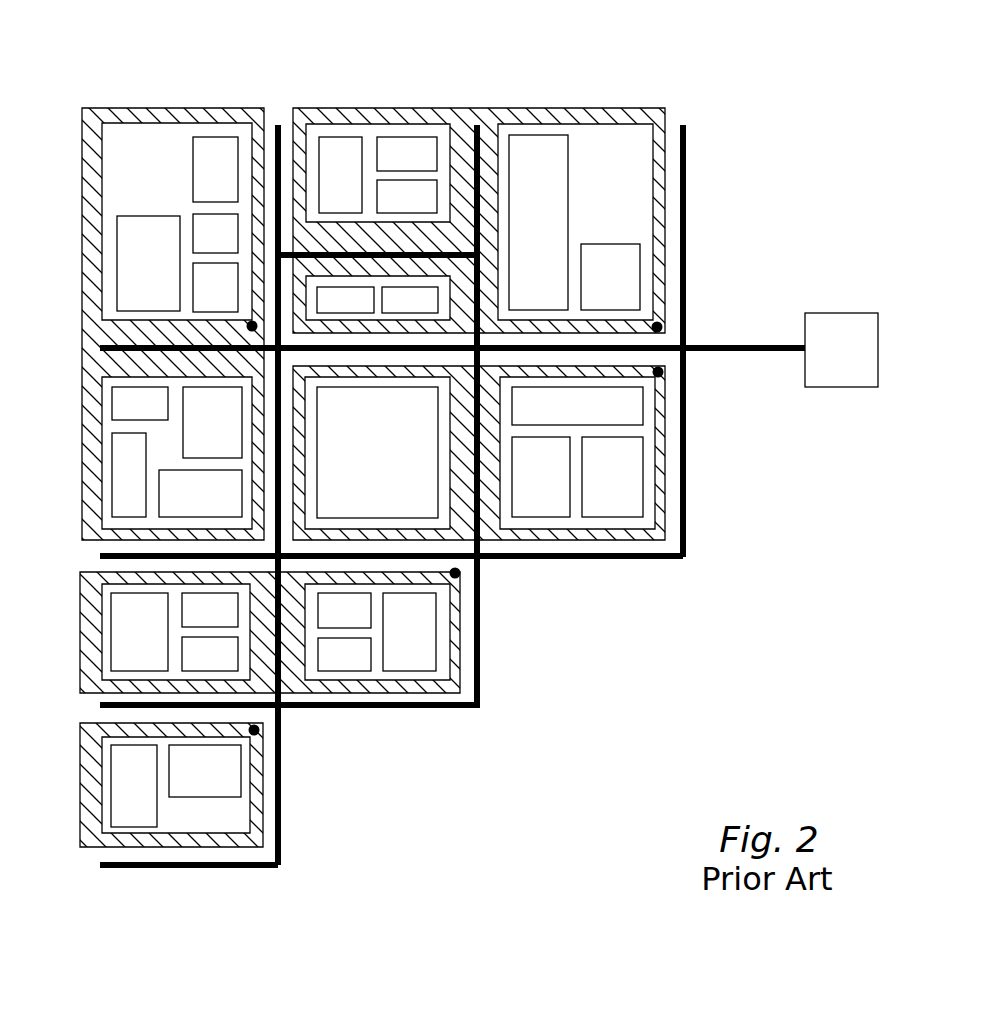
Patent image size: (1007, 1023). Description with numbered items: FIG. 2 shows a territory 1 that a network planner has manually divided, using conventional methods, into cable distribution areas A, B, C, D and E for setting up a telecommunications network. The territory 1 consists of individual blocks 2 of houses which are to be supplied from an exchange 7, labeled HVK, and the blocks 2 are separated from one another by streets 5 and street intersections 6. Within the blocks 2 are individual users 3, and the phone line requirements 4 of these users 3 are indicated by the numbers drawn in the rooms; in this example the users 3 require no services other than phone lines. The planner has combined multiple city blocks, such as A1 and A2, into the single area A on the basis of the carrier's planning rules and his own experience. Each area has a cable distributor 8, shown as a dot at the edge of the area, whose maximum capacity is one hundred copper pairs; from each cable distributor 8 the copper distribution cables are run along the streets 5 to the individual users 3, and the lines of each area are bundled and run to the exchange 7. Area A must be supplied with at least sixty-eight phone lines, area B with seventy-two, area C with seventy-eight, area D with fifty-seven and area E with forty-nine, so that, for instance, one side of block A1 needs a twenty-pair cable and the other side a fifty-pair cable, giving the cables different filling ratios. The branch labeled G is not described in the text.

The territory 1 is at (722, 77).
The block of houses 2 is at (610, 163).
The user 3 is at (540, 162).
The phone line requirement 4 is at (628, 504).
The street 5 is at (685, 222).
The street intersection 6 is at (685, 352).
The exchange 7 is at (840, 320).
The cable distributor 8 is at (657, 327).
The cable distribution area A is at (213, 113).
The city block A1 is at (162, 155).
The city block A2 is at (162, 447).
The cable distribution area B is at (386, 112).
The cable distribution area C is at (665, 485).
The cable distribution area D is at (422, 675).
The cable distribution area E is at (217, 842).
The branch line G is at (490, 660).